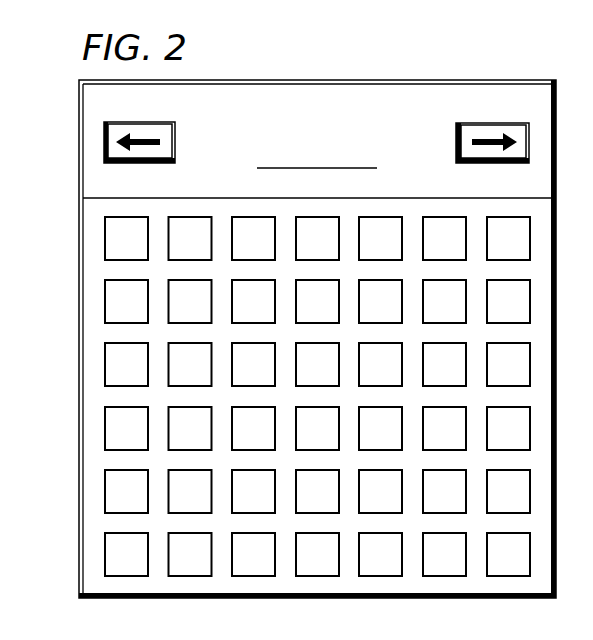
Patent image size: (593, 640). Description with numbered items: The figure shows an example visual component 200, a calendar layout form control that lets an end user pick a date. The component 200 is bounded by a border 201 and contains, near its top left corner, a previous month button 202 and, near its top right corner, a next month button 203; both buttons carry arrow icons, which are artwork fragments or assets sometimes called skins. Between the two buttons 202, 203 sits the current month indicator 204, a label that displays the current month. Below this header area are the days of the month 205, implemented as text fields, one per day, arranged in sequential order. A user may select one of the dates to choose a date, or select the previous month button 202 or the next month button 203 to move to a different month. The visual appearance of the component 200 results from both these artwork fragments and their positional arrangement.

The visual component 200 is at (345, 80).
The border 201 is at (92, 107).
The previous month button 202 is at (176, 140).
The next month button 203 is at (456, 141).
The current month indicator 204 is at (318, 145).
The days of the month 205 is at (92, 210).